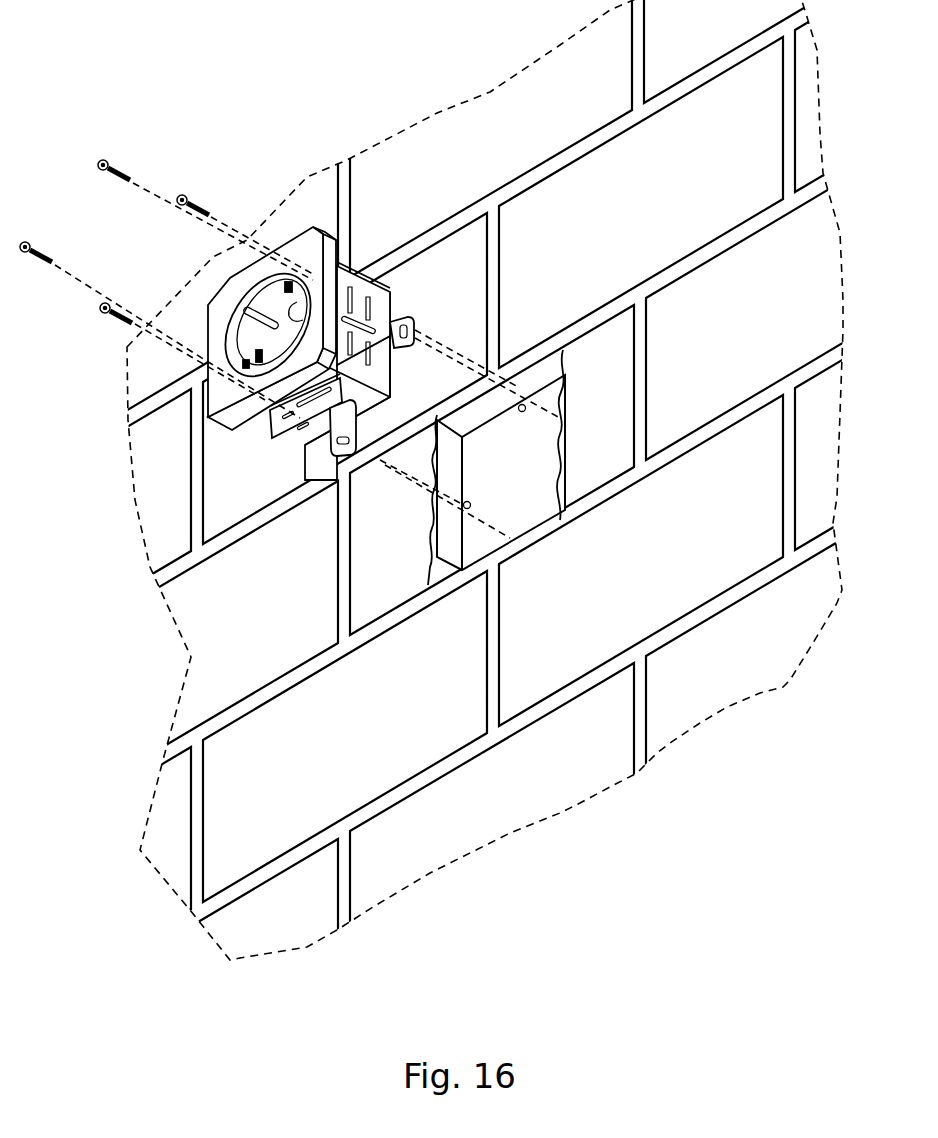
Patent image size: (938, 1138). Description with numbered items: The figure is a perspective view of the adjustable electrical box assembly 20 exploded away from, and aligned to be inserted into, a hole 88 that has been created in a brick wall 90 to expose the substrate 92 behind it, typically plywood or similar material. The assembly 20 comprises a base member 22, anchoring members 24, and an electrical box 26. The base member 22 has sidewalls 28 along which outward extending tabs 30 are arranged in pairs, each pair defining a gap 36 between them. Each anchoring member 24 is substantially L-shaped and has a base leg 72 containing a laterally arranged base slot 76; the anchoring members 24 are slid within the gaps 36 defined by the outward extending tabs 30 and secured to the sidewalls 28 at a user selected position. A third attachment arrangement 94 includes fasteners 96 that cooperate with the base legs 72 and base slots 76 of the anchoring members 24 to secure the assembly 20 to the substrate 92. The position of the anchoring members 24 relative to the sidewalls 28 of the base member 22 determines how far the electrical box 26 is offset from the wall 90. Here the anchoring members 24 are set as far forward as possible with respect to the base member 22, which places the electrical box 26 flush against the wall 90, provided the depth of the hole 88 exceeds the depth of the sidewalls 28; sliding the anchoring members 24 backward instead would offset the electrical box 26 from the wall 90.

The adjustable electrical box assembly 20 is at (340, 303).
The base member 22 is at (402, 404).
The anchoring member 24 is at (386, 290).
The electrical box 26 is at (230, 278).
The sidewall 28 is at (268, 422).
The outward extending tab 30 is at (358, 410).
The gap 36 is at (323, 437).
The base leg 72 is at (398, 310).
The base slot 76 is at (414, 331).
The hole 88 is at (552, 444).
The wall 90 is at (668, 203).
The substrate 92 is at (528, 481).
The third attachment arrangement 94 is at (290, 305).
The fastener 96 is at (207, 150).